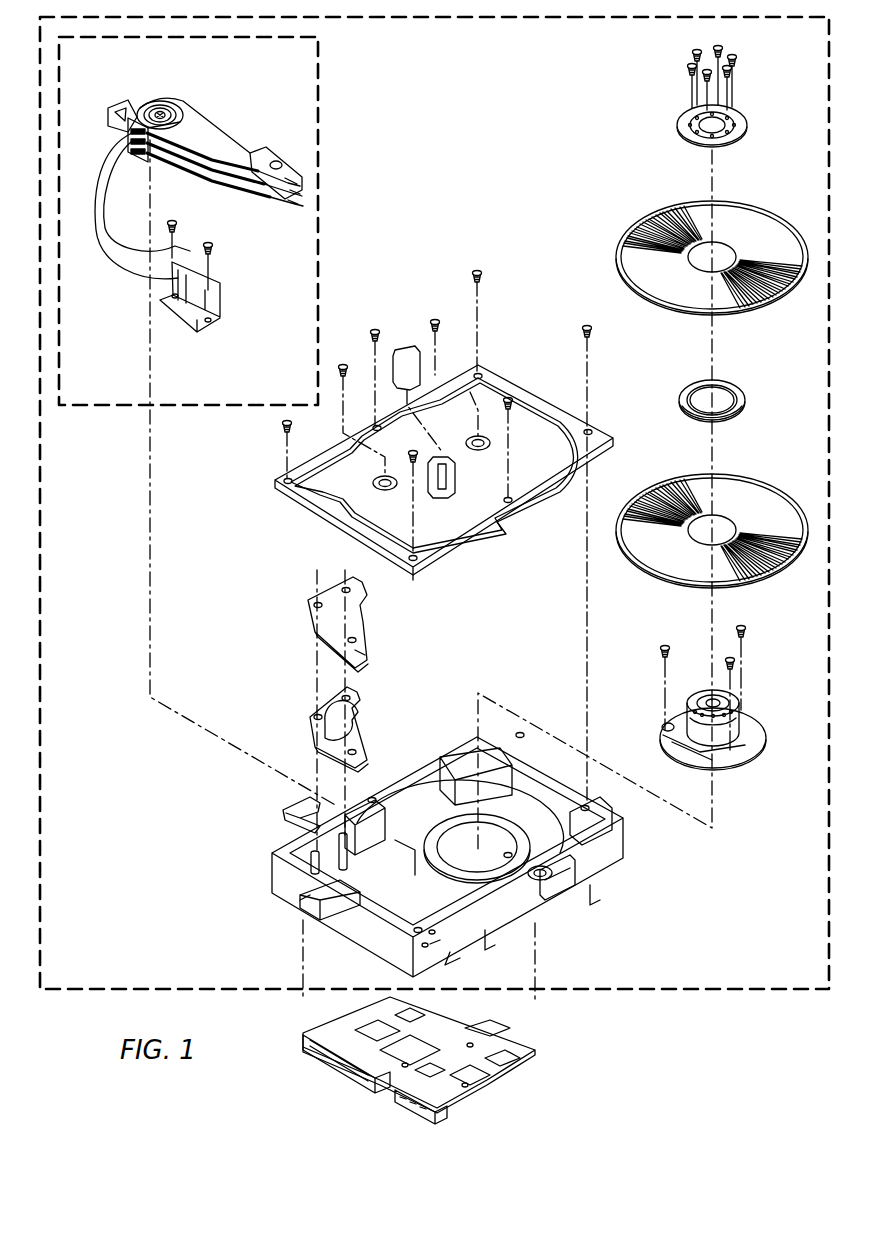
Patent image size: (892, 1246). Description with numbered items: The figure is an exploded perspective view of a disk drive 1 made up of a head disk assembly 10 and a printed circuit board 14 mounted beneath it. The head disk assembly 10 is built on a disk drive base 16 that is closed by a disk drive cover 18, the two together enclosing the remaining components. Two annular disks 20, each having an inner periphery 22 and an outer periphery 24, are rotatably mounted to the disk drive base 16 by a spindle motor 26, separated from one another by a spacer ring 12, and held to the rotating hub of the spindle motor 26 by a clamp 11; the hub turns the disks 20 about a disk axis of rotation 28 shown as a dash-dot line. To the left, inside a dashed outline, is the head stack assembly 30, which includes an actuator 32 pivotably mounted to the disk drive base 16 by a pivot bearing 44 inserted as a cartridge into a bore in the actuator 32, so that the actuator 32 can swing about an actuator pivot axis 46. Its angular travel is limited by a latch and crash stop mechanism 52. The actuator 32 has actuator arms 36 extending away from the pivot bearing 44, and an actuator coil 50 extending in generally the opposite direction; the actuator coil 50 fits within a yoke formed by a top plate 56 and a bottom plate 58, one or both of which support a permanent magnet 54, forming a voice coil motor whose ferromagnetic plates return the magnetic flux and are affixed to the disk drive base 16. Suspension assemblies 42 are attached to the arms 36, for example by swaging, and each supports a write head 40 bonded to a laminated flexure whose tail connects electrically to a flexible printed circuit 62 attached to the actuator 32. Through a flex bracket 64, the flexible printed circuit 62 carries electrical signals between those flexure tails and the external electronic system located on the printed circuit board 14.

The disk drive 1 is at (716, 1027).
The head disk assembly 10 is at (622, 988).
The clamp 11 is at (735, 112).
The spacer ring 12 is at (680, 400).
The printed circuit board 14 is at (512, 1072).
The disk drive base 16 is at (568, 890).
The disk drive cover 18 is at (488, 367).
The disk 20 is at (712, 387).
The inner periphery 22 is at (735, 250).
The outer periphery 24 is at (658, 305).
The spindle motor 26 is at (752, 758).
The disk axis of rotation 28 is at (700, 828).
The head stack assembly 30 is at (98, 403).
The actuator 32 is at (158, 103).
The actuator arm 36 is at (203, 129).
The write head 40 is at (288, 205).
The suspension assembly 42 is at (275, 181).
The pivot bearing 44 is at (165, 110).
The actuator pivot axis 46 is at (148, 591).
The actuator coil 50 is at (125, 112).
The latch and crash stop mechanism 52 is at (285, 822).
The permanent magnet 54 is at (335, 732).
The top plate 56 is at (330, 621).
The bottom plate 58 is at (360, 745).
The flexible printed circuit 62 is at (124, 264).
The flex bracket 64 is at (220, 315).